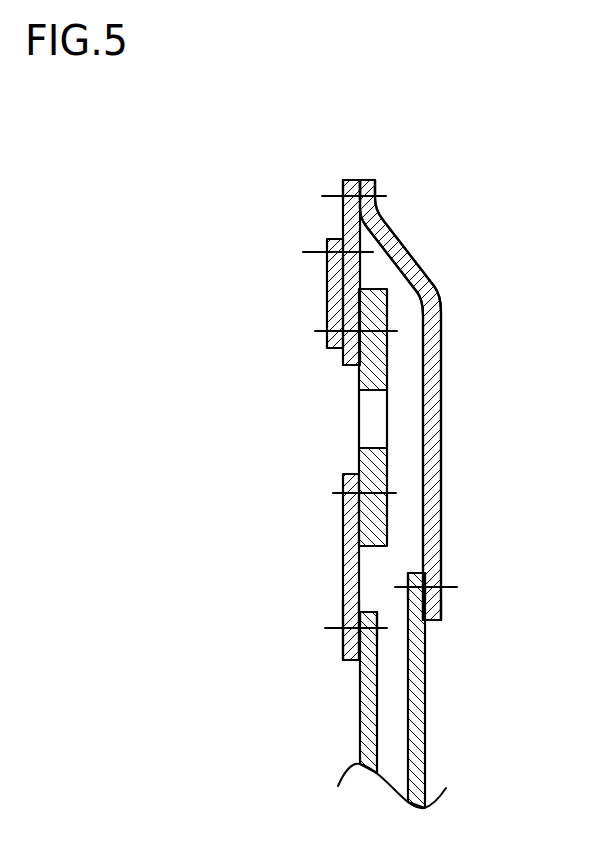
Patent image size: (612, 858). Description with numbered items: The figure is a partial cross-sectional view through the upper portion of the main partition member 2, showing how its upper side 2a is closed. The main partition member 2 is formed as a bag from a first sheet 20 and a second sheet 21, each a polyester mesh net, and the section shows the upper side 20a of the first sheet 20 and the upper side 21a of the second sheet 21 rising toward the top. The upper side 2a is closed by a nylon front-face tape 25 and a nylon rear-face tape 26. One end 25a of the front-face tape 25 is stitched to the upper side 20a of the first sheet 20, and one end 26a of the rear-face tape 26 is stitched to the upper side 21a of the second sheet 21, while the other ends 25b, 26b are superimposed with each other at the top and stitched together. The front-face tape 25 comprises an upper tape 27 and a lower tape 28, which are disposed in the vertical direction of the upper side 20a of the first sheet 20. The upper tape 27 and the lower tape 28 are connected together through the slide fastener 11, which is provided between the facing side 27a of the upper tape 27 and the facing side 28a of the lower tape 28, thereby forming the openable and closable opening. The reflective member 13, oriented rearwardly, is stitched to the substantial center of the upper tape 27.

The main partition member 2 is at (443, 332).
The upper side 2a is at (358, 180).
The slide fastener 11 is at (392, 417).
The reflective member 13 is at (332, 265).
The first sheet 20 is at (362, 713).
The upper side of the first sheet 20a is at (343, 607).
The second sheet 21 is at (423, 729).
The upper side of the second sheet 21a is at (420, 572).
The front-face tape 25 is at (341, 208).
The one end of the front-face tape 25a is at (343, 660).
The other end of the front-face tape 25b is at (353, 178).
The rear-face tape 26 is at (418, 267).
The one end of the rear-face tape 26a is at (433, 621).
The other end of the rear-face tape 26b is at (367, 178).
The upper tape 27 is at (346, 357).
The facing side of the upper tape 27a is at (358, 366).
The lower tape 28 is at (345, 480).
The facing side of the lower tape 28a is at (348, 473).